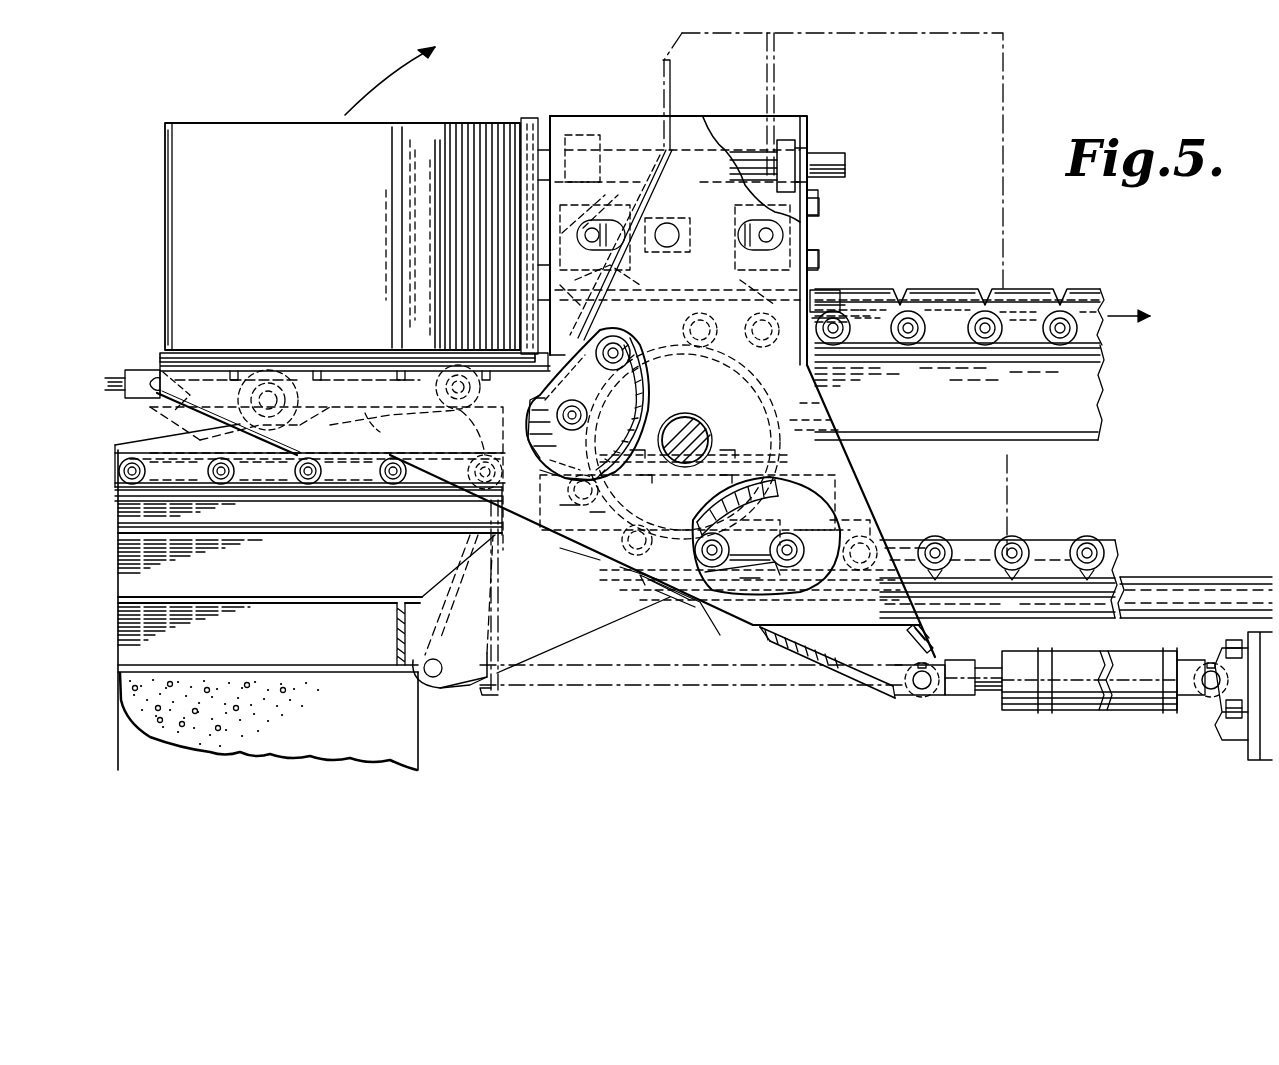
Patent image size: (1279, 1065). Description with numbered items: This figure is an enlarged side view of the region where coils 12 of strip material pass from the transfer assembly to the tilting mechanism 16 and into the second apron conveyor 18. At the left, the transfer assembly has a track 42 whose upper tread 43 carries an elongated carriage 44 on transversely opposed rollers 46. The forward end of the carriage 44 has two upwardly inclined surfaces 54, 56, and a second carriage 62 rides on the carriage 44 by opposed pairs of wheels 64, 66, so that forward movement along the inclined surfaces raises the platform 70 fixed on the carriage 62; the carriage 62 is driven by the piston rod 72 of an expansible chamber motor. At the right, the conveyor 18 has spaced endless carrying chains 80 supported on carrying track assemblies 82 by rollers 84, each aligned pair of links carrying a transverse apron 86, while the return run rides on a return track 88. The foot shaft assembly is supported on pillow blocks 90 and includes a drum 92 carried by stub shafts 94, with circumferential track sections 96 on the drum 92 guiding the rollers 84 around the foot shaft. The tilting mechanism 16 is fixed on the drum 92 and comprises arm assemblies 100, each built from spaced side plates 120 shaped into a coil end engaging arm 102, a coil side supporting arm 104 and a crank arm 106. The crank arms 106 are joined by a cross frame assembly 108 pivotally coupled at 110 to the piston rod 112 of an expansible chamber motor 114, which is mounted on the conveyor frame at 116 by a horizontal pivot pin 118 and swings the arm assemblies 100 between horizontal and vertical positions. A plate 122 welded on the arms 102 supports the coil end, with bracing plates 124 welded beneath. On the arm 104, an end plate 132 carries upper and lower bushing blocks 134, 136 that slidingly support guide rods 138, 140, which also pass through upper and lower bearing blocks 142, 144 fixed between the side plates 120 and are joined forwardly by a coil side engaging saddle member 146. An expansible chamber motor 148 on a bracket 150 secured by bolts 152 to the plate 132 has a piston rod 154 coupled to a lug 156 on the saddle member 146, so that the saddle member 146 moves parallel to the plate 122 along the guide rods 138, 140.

The coil 12 is at (350, 236).
The tilting mechanism 16 is at (848, 168).
The second apron conveyor 18 is at (1062, 290).
The track 42 is at (350, 508).
The tread 43 is at (330, 491).
The carriage 44 is at (263, 488).
The rollers 46 is at (147, 471).
The inclined surface 54 is at (178, 432).
The inclined surface 56 is at (301, 428).
The second carriage 62 is at (385, 367).
The wheels 64 is at (270, 370).
The wheels 66 is at (440, 408).
The platform 70 is at (350, 353).
The piston rod 72 is at (118, 370).
The carrying chains 80 is at (1060, 545).
The carrying track assemblies 82 is at (962, 404).
The rollers 84 is at (895, 345).
The apron 86 is at (935, 289).
The return track 88 is at (1185, 578).
The pillow blocks 90 is at (720, 472).
The drum 92 is at (828, 417).
The stub shafts 94 is at (685, 420).
The track sections 96 is at (762, 495).
The arm assembly 100 is at (766, 112).
The coil end engaging arm 102 is at (208, 368).
The coil side supporting arm 104 is at (598, 116).
The crank arm 106 is at (730, 598).
The cross frame assembly 108 is at (848, 655).
The pivotal coupling 110 is at (915, 697).
The piston rod 112 is at (990, 697).
The expansible chamber motor 114 is at (1080, 707).
The mounting location 116 is at (1228, 722).
The pivot pin 118 is at (1208, 698).
The side plates 120 is at (865, 488).
The plate 122 is at (312, 368).
The bracing plates 124 is at (460, 510).
The end plate 132 is at (810, 124).
The upper bushing block 134 is at (777, 147).
The lower bushing block 136 is at (748, 285).
The upper guide rod 138 is at (835, 176).
The lower guide rod 140 is at (820, 296).
The upper bearing block 142 is at (590, 138).
The lower bearing block 144 is at (612, 276).
The saddle member 146 is at (527, 118).
The expansible chamber motor 148 is at (702, 210).
The bracket 150 is at (758, 208).
The bolts 152 is at (816, 258).
The piston rod 154 is at (601, 222).
The lug 156 is at (596, 230).